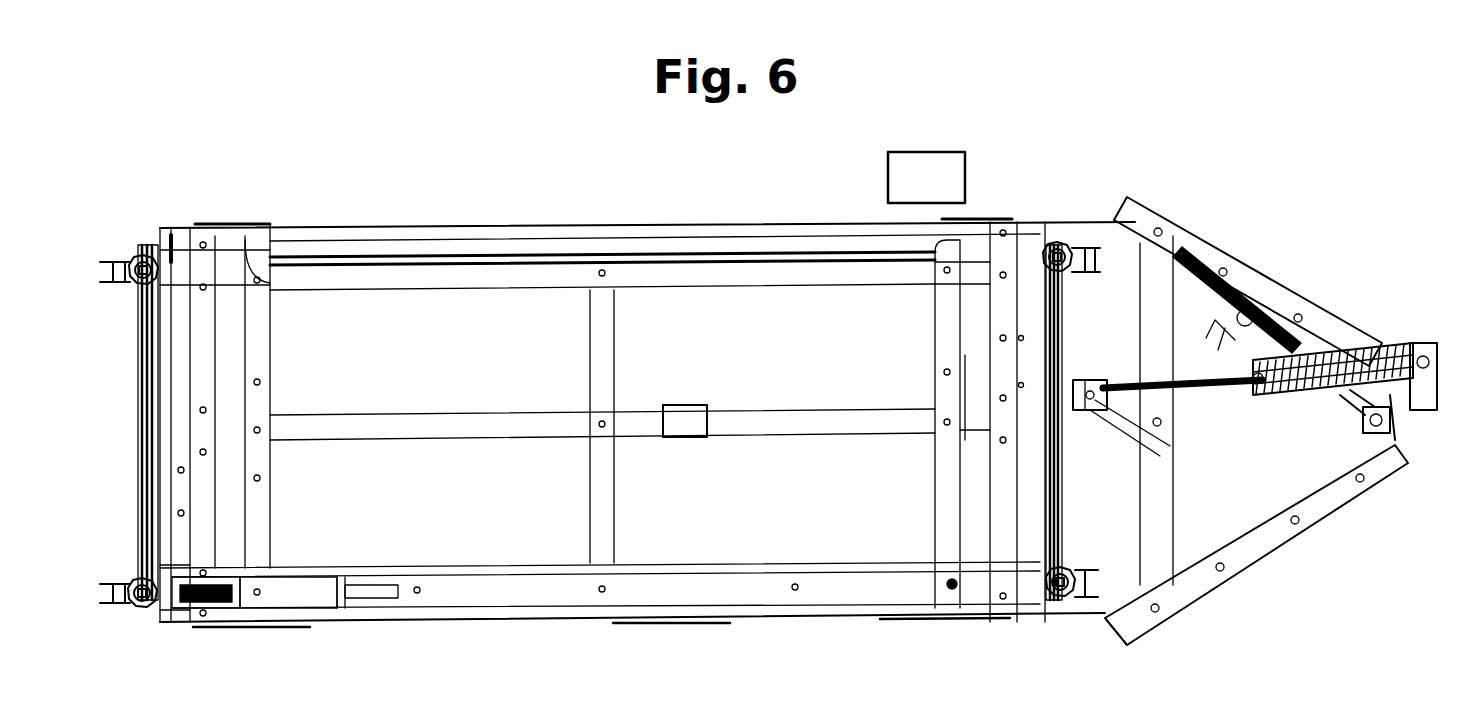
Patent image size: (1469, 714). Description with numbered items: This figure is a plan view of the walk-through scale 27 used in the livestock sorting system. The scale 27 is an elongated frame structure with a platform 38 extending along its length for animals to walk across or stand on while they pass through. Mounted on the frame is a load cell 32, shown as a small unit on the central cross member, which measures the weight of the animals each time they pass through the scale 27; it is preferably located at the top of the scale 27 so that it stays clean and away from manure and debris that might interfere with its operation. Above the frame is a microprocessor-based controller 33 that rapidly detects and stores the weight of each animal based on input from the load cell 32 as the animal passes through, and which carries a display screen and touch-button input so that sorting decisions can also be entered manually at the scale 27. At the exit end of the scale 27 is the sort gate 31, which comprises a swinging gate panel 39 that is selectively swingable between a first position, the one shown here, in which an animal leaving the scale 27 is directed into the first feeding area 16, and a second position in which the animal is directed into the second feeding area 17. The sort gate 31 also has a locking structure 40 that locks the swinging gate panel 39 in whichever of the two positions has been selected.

The first feeding area 16 is at (1420, 590).
The second feeding area 17 is at (1423, 246).
The walk-through scale 27 is at (539, 226).
The sort gate 31 is at (1223, 247).
The load cell 32 is at (680, 440).
The microprocessor-based controller 33 is at (947, 172).
The platform 38 is at (727, 333).
The swinging gate panel 39 is at (1294, 341).
The locking structure 40 is at (1225, 330).